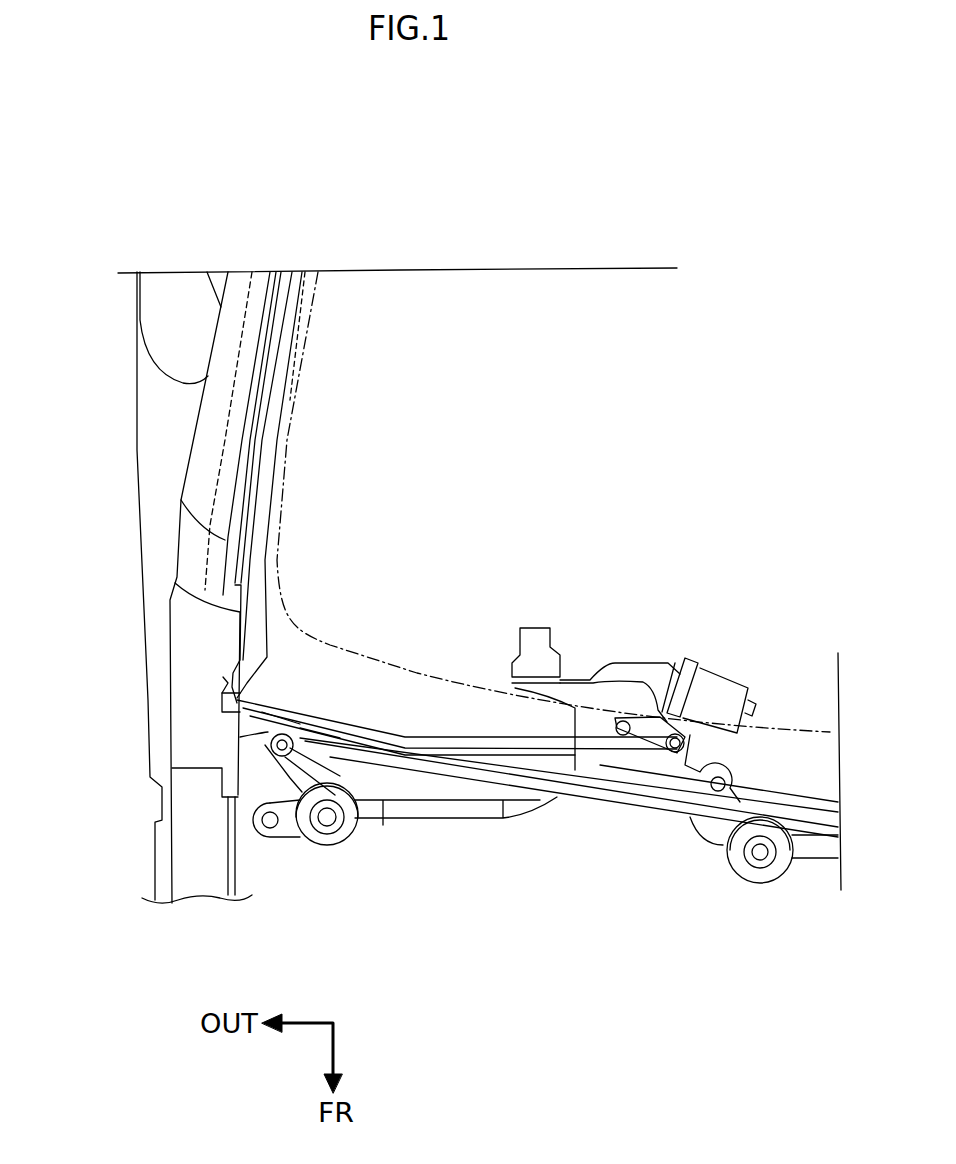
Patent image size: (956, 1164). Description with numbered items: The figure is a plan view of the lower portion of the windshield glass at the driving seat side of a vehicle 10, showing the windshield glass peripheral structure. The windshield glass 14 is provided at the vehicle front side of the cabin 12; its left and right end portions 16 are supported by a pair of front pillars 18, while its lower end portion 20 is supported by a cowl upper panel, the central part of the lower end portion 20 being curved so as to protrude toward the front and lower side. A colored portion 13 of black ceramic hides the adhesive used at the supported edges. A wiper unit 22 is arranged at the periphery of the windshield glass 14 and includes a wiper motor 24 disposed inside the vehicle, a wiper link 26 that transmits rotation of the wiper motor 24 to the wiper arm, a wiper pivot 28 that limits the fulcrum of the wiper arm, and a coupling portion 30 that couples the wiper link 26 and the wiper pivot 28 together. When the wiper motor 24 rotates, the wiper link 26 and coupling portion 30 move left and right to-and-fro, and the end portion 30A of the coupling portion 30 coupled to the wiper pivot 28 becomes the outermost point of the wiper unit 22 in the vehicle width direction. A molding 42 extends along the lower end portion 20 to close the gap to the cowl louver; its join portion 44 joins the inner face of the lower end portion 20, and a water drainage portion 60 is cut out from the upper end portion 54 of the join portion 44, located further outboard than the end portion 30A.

The vehicle 10 is at (103, 408).
The cabin 12 is at (540, 451).
The colored portion 13 is at (417, 678).
The windshield glass 14 is at (433, 288).
The left and right end portions 16 is at (293, 287).
The front pillars 18 is at (240, 297).
The lower end portion 20 is at (798, 782).
The wiper unit 22 is at (336, 856).
The wiper motor 24 is at (655, 667).
The wiper link 26 is at (450, 737).
The wiper pivot 28 is at (307, 822).
The coupling portion 30 is at (293, 763).
The end portion of the coupling portion 30A is at (240, 737).
The molding 42 is at (342, 729).
The join portion 44 is at (248, 690).
The upper end portion of the join portion 54 is at (307, 723).
The water drainage portion 60 is at (272, 707).